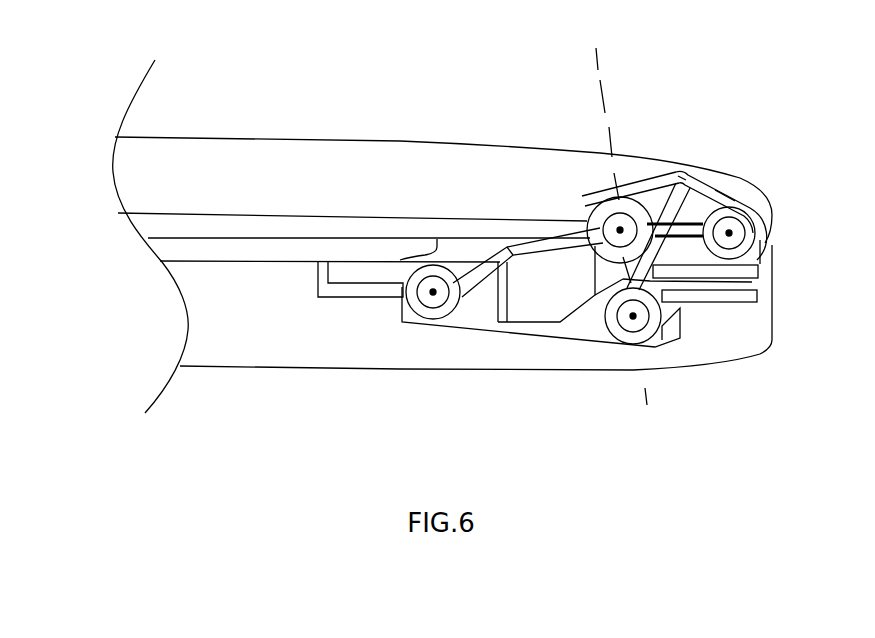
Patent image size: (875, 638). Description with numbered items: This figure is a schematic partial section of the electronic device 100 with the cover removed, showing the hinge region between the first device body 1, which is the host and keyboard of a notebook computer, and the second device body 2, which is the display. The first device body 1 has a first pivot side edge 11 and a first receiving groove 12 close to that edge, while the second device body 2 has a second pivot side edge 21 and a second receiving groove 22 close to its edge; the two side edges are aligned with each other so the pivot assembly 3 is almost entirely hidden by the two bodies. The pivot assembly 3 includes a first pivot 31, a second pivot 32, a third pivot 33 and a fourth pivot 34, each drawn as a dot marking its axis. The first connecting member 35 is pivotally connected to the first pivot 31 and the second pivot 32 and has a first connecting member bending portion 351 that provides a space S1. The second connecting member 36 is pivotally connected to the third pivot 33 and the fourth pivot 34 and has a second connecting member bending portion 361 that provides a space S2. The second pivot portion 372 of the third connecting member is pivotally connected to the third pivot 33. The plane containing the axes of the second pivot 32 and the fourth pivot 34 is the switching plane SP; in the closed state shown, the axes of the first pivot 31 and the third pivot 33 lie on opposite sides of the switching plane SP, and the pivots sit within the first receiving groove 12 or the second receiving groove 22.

The electronic device 100 is at (348, 106).
The first device body 1 is at (253, 367).
The second device body 2 is at (240, 140).
The second pivot side edge 21 is at (765, 198).
The second receiving groove 22 is at (660, 197).
The switching plane SP is at (598, 52).
The first pivot side edge 11 is at (768, 278).
The first receiving groove 12 is at (575, 332).
The pivot assembly 3 is at (746, 195).
The first pivot 31 is at (433, 292).
The second pivot 32 is at (620, 230).
The third pivot 33 is at (729, 233).
The fourth pivot 34 is at (633, 316).
The first connecting member 35 is at (535, 222).
The first connecting member bending portion 351 is at (500, 246).
The second connecting member 36 is at (670, 253).
The second connecting member bending portion 361 is at (684, 181).
The second pivot portion 372 is at (735, 200).
The space S1 is at (520, 272).
The space S2 is at (686, 212).